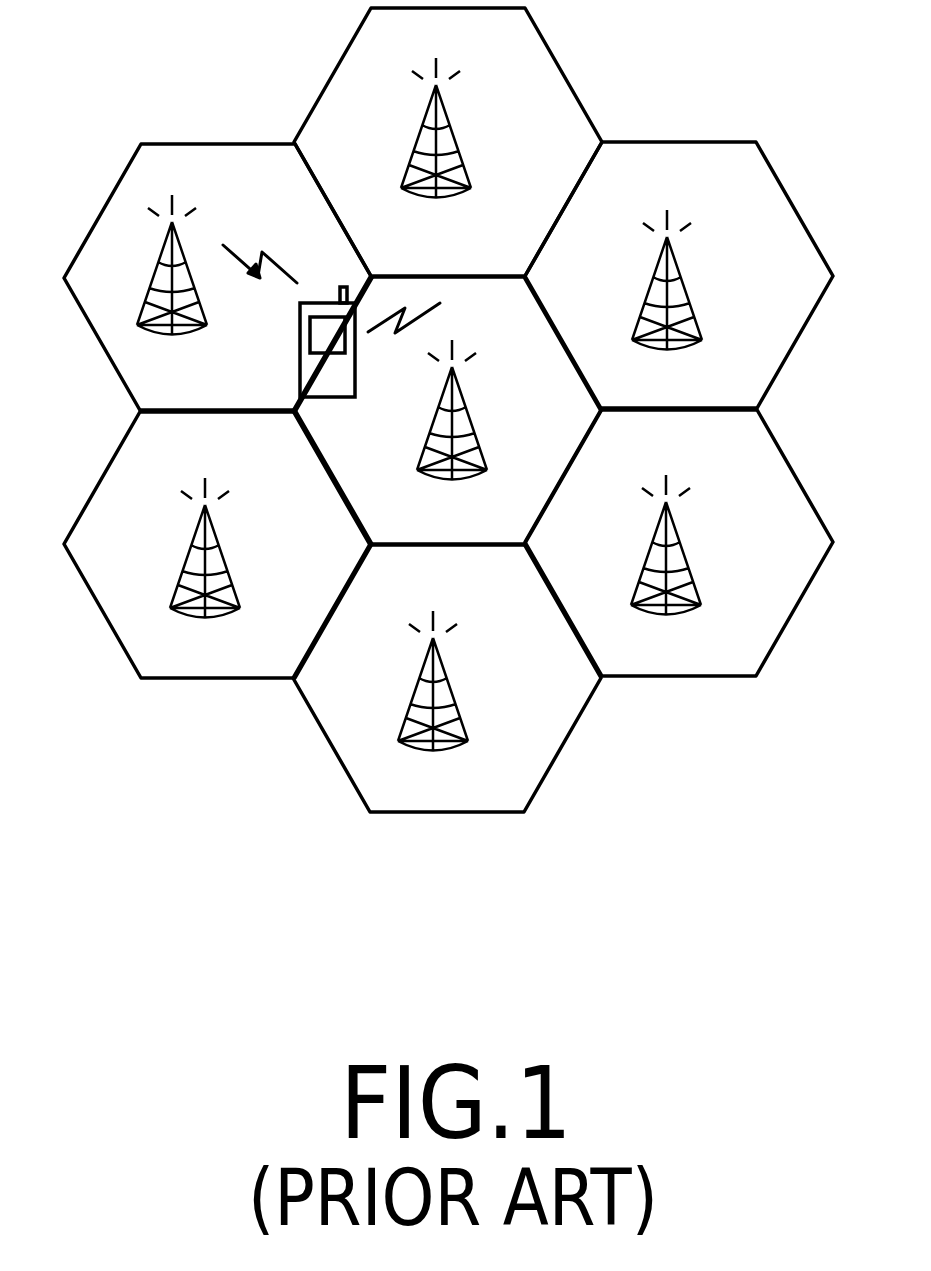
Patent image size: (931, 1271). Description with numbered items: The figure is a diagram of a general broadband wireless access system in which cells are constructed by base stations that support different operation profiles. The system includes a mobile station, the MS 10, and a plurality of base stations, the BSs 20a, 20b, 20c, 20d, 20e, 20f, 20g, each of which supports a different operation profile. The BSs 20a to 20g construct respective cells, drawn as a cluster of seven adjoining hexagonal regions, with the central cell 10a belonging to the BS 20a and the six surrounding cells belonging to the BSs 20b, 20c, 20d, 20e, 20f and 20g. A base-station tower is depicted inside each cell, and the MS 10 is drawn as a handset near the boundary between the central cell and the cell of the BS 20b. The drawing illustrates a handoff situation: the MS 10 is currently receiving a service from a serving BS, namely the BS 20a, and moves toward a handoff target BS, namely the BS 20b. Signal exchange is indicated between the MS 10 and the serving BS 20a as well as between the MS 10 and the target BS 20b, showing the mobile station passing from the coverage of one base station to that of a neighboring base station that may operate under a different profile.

The MS 10 is at (300, 373).
The cell 10a is at (443, 278).
The BS 20a is at (480, 423).
The BS 20b is at (197, 247).
The BS 20c is at (462, 143).
The BS 20d is at (690, 293).
The BS 20e is at (688, 557).
The BS 20f is at (463, 693).
The BS 20g is at (240, 583).